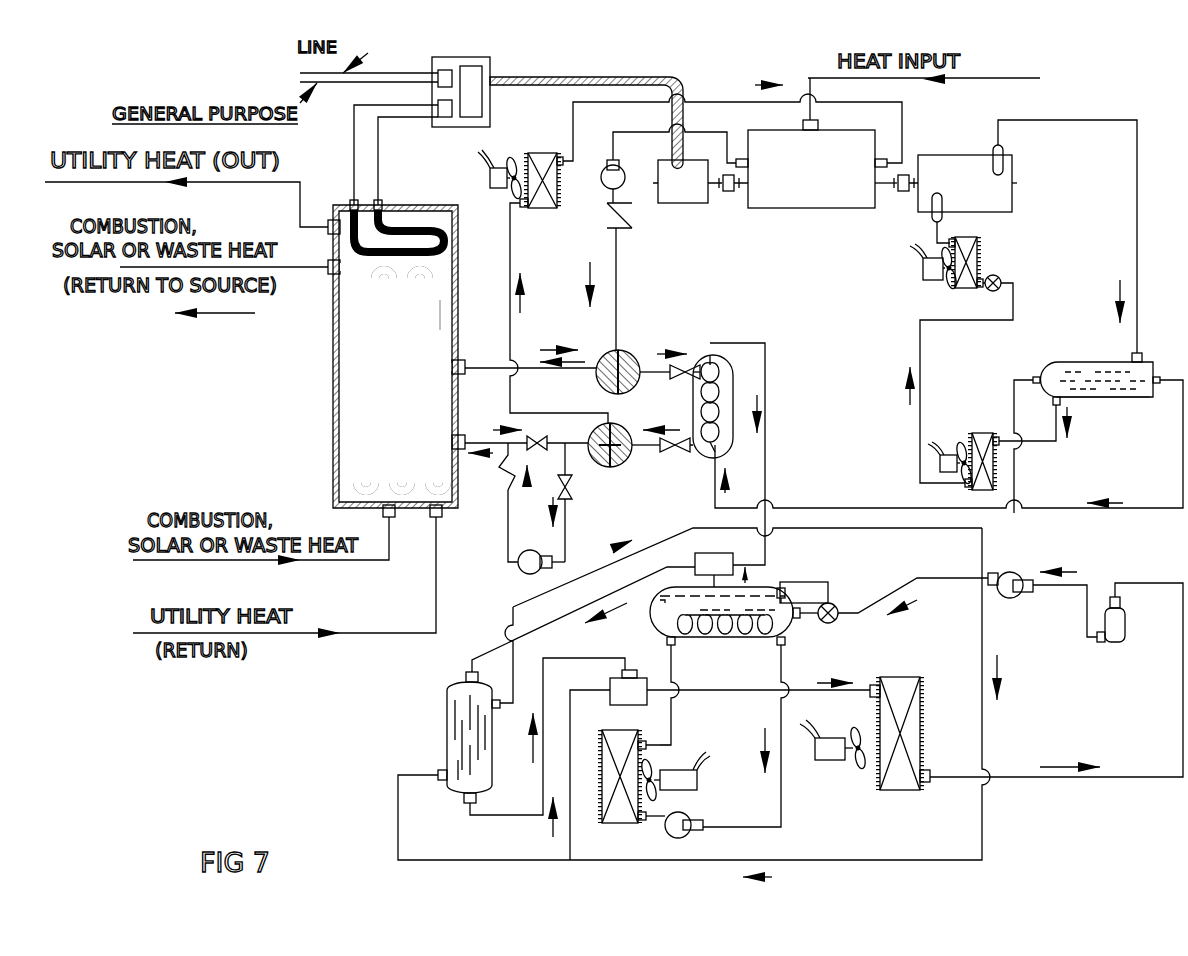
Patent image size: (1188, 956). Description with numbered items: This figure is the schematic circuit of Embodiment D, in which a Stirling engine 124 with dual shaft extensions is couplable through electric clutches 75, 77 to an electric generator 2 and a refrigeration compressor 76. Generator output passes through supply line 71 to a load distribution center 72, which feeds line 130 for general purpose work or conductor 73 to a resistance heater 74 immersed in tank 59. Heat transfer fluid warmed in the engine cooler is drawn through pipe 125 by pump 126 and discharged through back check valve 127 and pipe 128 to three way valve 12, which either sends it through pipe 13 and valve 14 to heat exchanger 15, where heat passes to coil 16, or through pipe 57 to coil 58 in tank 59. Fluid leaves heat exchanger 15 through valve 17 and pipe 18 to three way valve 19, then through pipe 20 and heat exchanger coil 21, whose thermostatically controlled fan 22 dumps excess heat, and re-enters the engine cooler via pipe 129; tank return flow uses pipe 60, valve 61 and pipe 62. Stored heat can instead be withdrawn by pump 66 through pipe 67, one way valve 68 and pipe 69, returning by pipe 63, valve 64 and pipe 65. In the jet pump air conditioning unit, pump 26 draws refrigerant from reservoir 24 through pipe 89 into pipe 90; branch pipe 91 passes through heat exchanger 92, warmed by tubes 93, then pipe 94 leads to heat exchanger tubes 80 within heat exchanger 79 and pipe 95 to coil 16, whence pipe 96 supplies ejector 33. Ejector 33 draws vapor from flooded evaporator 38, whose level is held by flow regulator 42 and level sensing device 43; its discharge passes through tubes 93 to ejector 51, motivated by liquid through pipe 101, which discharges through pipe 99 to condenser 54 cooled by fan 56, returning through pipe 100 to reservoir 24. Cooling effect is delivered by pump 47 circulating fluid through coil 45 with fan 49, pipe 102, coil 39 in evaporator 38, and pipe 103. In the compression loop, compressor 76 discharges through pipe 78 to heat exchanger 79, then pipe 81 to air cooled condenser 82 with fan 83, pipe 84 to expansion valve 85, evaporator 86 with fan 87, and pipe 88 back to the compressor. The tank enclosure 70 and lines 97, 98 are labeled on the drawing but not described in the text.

The electrical generator 2 is at (687, 203).
The three way valve 12 is at (625, 352).
The pipe 13 is at (653, 380).
The valve 14 is at (679, 380).
The heat exchanger 15 is at (733, 392).
The heat exchanger coil 16 is at (720, 443).
The valve 17 is at (675, 457).
The pipe 18 is at (647, 447).
The three way valve 19 is at (615, 467).
The pipe 20 is at (512, 265).
The heat exchanger coil 21 is at (563, 192).
The motor operated fan 22 is at (507, 170).
The liquid reservoir 24 is at (1127, 622).
The pump 26 is at (1012, 600).
The ejector 33 is at (722, 553).
The flooded type evaporator 38 is at (702, 638).
The heat transfer coil 39 is at (718, 638).
The flow regulator 42 is at (838, 620).
The liquid level sensing device 43 is at (803, 582).
The heat transfer coil 45 is at (613, 823).
The pump 47 is at (688, 834).
The motor operated fan 49 is at (698, 783).
The ejector 51 is at (610, 702).
The condenser 54 is at (907, 677).
The motor operated fan 56 is at (835, 738).
The pipe 57 is at (473, 367).
The coil 58 is at (448, 315).
The tank 59 is at (460, 268).
The pipe 60 is at (467, 442).
The valve 61 is at (537, 437).
The pipe 62 is at (573, 443).
The pipe 63 is at (565, 452).
The valve 64 is at (572, 485).
The pipe 65 is at (565, 532).
The pump 66 is at (530, 574).
The pipe 67 is at (508, 523).
The one way valve 68 is at (507, 487).
The pipe 69 is at (505, 458).
The heat storage tank 70 is at (339, 420).
The electric supply line 71 is at (640, 75).
The load distribution center 72 is at (482, 55).
The conductor 73 is at (378, 172).
The electric resistance heater 74 is at (413, 222).
The electric clutch 75 is at (728, 191).
The refrigeration compressor 76 is at (950, 155).
The electric clutch 77 is at (903, 191).
The pipe 78 is at (1023, 120).
The heat exchanger 79 is at (1102, 397).
The heat exchanger tubes 80 is at (1103, 377).
The pipe 81 is at (1042, 443).
The air cooled condenser 82 is at (987, 433).
The motor operated fan 83 is at (945, 455).
The pipe 84 is at (920, 420).
The expansion valve 85 is at (1001, 282).
The evaporator 86 is at (979, 241).
The motor operated fan 87 is at (930, 282).
The pipe 88 is at (938, 232).
The pipe 89 is at (1085, 602).
The pipe 90 is at (972, 583).
The branch pipe 91 is at (1015, 378).
The heat exchanger 92 is at (447, 753).
The heat exchanger tubes 93 is at (465, 710).
The pipe 94 is at (598, 558).
The pipe 95 is at (1182, 420).
The pipe 96 is at (765, 403).
The conduit 97 is at (620, 588).
The conduit 98 is at (517, 815).
The pipe 99 is at (708, 690).
The pipe 100 is at (1180, 672).
The pipe 101 is at (572, 690).
The pipe 102 is at (672, 726).
The pipe 103 is at (781, 803).
The Stirling engine 124 is at (822, 208).
The pipe 125 is at (640, 132).
The pump 126 is at (620, 167).
The back check valve 127 is at (610, 215).
The pipe 128 is at (620, 302).
The pipe 129 is at (573, 120).
The line 130 is at (345, 45).